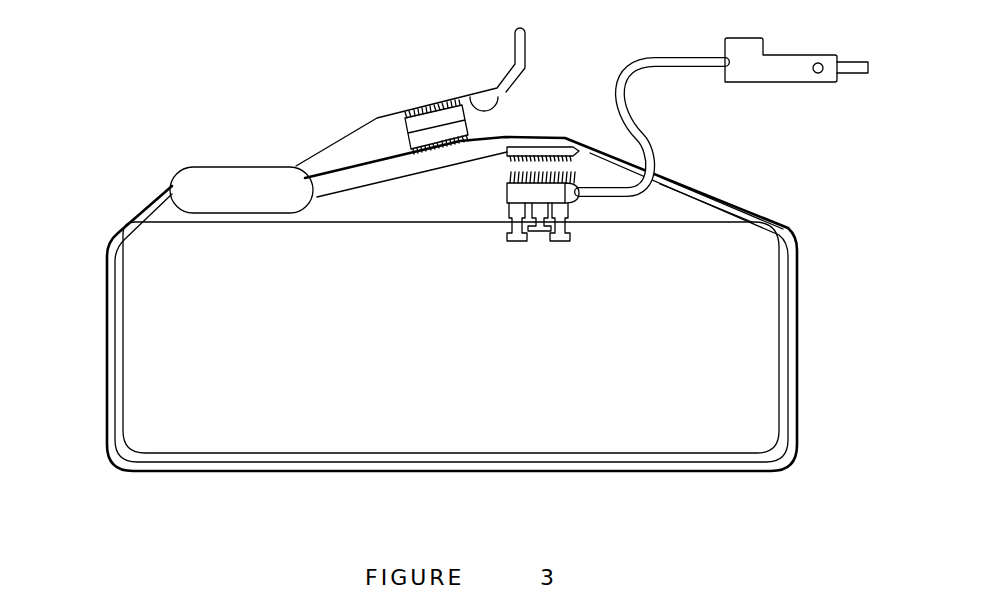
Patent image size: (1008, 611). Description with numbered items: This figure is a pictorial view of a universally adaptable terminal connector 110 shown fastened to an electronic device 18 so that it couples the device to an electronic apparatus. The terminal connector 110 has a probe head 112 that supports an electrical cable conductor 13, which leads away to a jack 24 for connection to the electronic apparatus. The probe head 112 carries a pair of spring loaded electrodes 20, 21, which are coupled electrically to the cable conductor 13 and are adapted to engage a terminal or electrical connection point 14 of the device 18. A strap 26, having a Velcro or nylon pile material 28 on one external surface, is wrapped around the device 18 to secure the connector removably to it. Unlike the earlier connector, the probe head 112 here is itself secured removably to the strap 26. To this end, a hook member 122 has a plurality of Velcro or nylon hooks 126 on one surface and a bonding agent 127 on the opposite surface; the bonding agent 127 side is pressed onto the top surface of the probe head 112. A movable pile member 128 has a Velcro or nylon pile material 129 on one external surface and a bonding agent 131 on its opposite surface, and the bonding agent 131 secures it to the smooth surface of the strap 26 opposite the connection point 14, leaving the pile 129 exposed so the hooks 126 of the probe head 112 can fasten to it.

The universally adaptable terminal connector 110 is at (763, 490).
The electronic device 18 is at (147, 439).
The strap 26 is at (798, 253).
The Velcro or nylon pile material 28 is at (497, 88).
The electrical cable conductor 13 is at (712, 57).
The jack 24 is at (803, 55).
The movable pile member 128 is at (520, 147).
The bonding agent 131 is at (530, 147).
The Velcro or nylon pile material 129 is at (583, 135).
The hook member 122 is at (575, 172).
The Velcro or nylon hooks 126 is at (503, 177).
The probe head 112 is at (507, 198).
The bonding agent 127 is at (573, 205).
The spring loaded electrode 20 is at (505, 230).
The spring loaded electrode 21 is at (573, 229).
The electrical connection point 14 is at (517, 264).